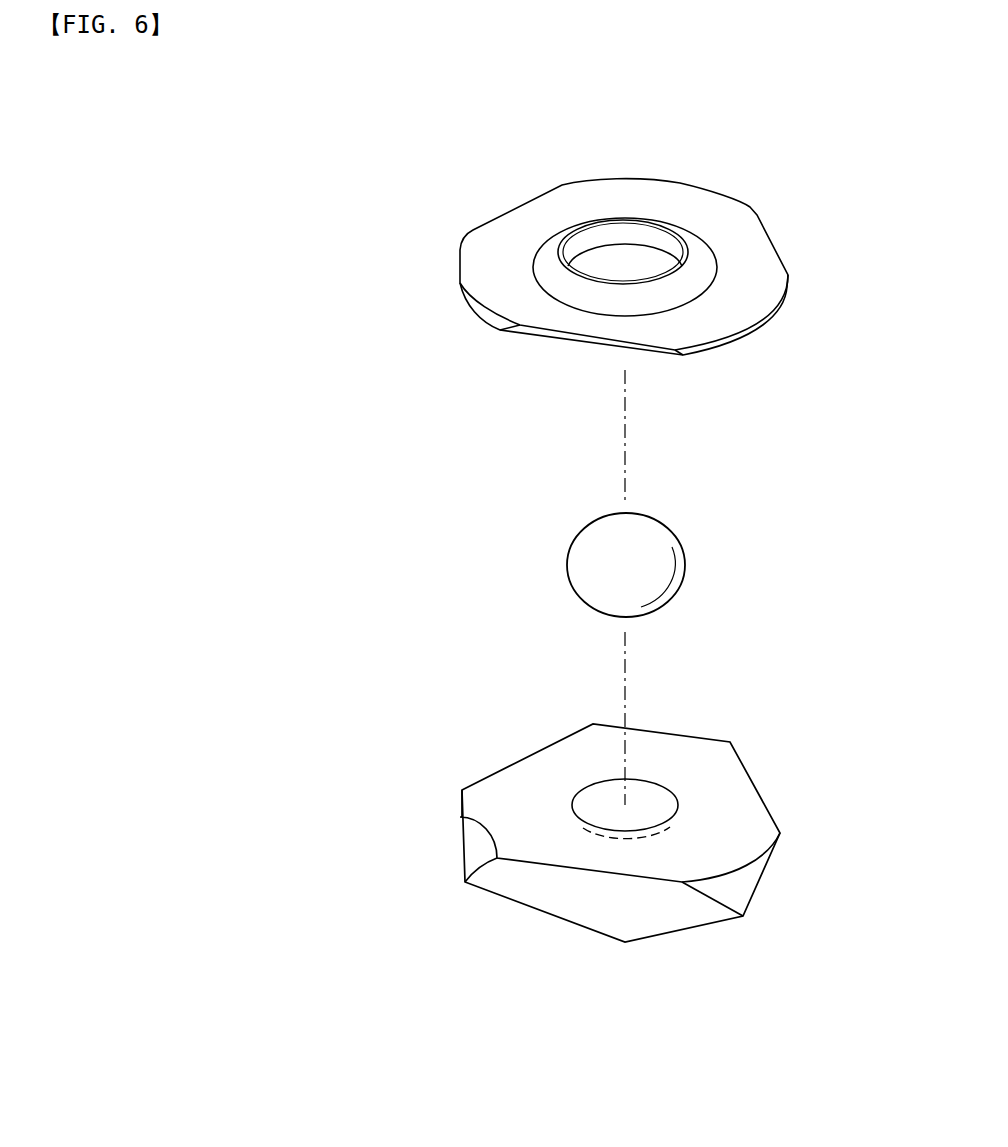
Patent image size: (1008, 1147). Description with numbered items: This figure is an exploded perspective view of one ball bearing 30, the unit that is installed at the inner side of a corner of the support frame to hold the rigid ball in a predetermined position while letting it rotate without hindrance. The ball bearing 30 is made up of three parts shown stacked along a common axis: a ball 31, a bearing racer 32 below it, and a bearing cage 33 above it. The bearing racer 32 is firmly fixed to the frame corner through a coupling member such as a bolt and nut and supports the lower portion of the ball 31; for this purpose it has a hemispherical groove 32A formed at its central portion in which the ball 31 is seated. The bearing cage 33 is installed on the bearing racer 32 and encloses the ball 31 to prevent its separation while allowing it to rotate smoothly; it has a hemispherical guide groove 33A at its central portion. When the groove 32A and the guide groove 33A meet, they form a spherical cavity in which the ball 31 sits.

The ball bearing 30 is at (222, 312).
The ball 31 is at (567, 565).
The bearing racer 32 is at (527, 760).
The groove 32A is at (650, 800).
The bearing cage 33 is at (470, 246).
The guide groove 33A is at (665, 245).